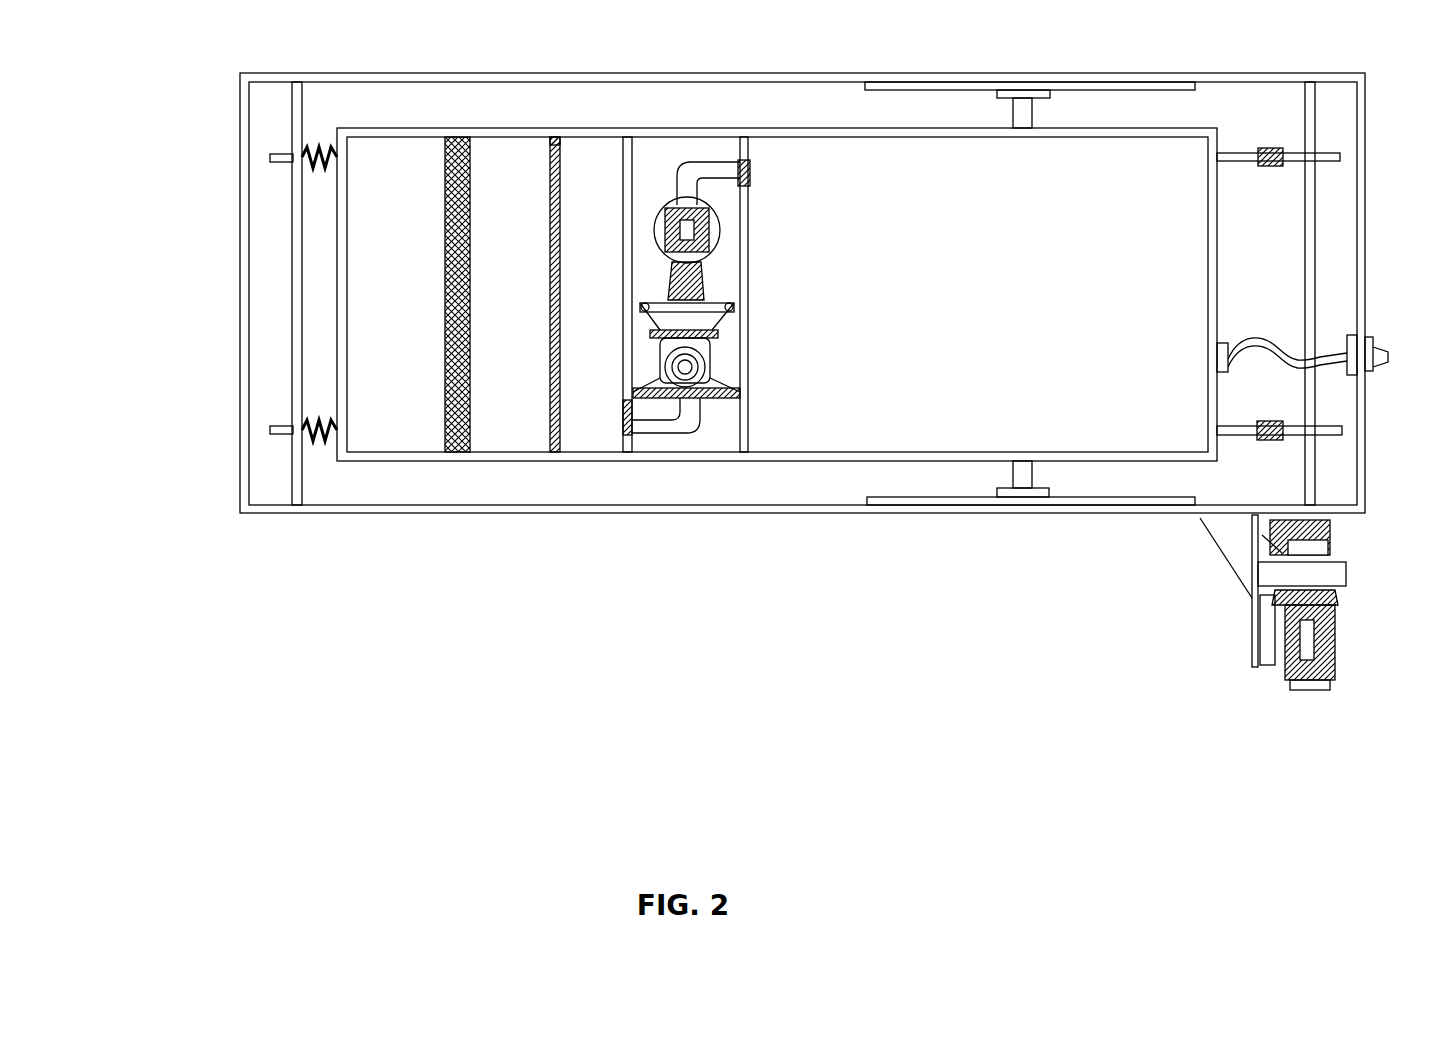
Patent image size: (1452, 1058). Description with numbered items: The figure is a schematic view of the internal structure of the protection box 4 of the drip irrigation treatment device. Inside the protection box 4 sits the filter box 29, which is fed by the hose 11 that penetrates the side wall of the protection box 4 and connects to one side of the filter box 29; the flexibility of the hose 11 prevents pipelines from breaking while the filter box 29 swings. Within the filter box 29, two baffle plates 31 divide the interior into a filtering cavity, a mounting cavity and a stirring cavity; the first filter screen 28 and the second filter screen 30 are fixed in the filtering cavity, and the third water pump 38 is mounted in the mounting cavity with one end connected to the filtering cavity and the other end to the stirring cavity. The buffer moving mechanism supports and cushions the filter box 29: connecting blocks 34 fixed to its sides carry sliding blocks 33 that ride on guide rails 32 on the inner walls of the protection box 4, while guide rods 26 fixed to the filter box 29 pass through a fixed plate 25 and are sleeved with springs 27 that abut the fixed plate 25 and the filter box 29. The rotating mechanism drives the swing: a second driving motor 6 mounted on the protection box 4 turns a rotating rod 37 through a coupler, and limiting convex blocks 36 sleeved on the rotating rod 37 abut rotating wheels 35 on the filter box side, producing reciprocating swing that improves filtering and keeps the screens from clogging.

The protection box 4 is at (1363, 437).
The second driving motor 6 is at (1263, 635).
The hose 11 is at (1322, 360).
The fixed plate 25 is at (290, 208).
The guide rod 26 is at (273, 155).
The spring 27 is at (300, 143).
The first filter screen 28 is at (470, 147).
The filter box 29 is at (557, 130).
The second filter screen 30 is at (562, 166).
The baffle plate 31 is at (632, 159).
The guide rail 32 is at (958, 83).
The sliding block 33 is at (1010, 90).
The connecting block 34 is at (1023, 120).
The rotating wheel 35 is at (1287, 150).
The limiting convex block 36 is at (1333, 155).
The rotating rod 37 is at (1310, 213).
The third water pump 38 is at (632, 400).